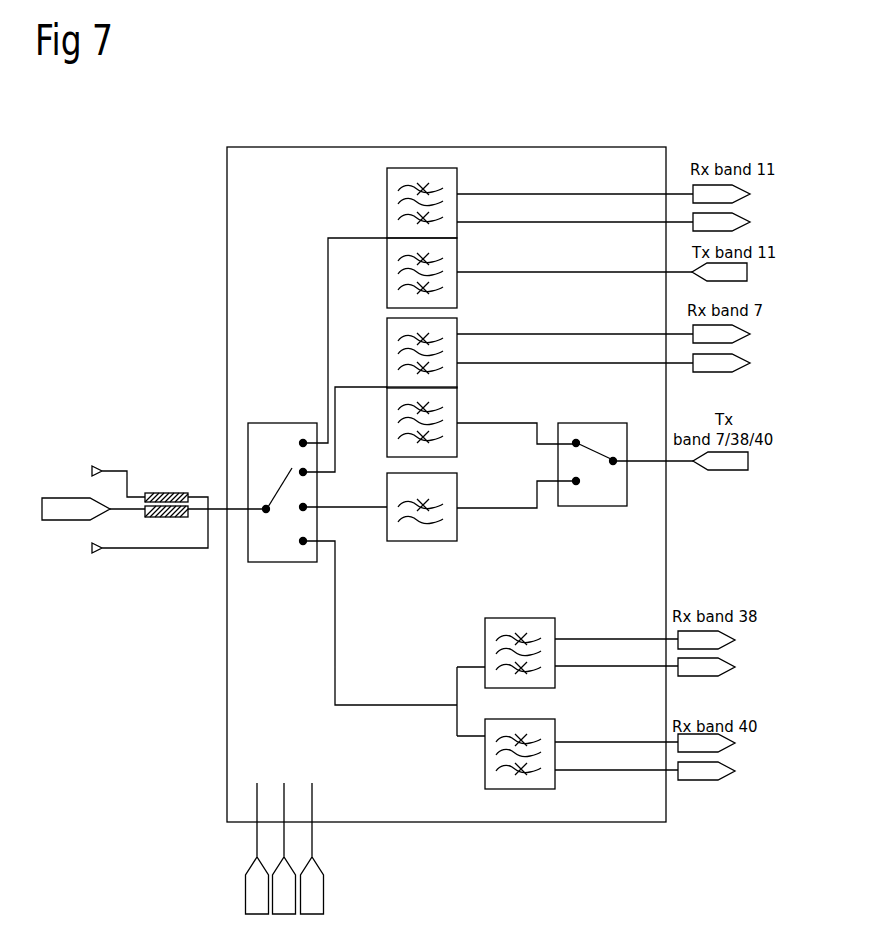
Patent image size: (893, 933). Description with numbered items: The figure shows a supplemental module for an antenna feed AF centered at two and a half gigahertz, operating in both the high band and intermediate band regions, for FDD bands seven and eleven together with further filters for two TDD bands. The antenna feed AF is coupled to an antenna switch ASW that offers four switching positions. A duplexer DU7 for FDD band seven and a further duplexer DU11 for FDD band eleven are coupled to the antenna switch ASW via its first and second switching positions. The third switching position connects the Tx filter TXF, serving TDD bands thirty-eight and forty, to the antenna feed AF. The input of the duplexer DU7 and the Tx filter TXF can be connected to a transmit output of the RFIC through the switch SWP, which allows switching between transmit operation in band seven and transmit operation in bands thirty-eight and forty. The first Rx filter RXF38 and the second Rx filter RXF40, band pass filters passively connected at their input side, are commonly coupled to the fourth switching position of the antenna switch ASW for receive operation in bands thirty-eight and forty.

The antenna feed AF is at (78, 503).
The antenna switch ASW is at (270, 437).
The duplexer for FDD band 11 DU11 is at (397, 196).
The duplexer for FDD band 7 DU7 is at (396, 329).
The Tx filter TXF is at (399, 541).
The switch SWP is at (607, 427).
The first Rx filter RXF38 is at (532, 622).
The second Rx filter RXF40 is at (505, 777).